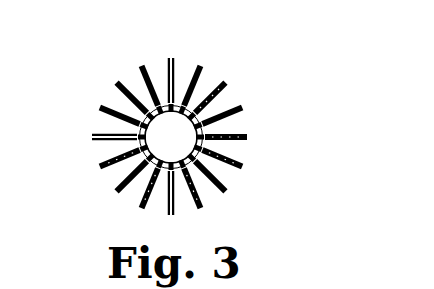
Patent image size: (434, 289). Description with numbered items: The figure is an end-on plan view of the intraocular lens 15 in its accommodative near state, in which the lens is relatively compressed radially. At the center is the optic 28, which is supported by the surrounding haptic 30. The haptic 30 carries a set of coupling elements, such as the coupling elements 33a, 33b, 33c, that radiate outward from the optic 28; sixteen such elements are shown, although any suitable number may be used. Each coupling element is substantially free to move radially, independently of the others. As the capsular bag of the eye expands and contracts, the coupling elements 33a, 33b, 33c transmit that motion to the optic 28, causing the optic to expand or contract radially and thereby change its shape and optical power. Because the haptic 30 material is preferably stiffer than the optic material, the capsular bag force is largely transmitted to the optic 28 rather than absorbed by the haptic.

The intraocular lens 15 is at (124, 47).
The optic 28 is at (138, 148).
The haptic 30 is at (203, 71).
The coupling element 33a is at (238, 110).
The coupling element 33b is at (241, 138).
The coupling element 33c is at (236, 166).